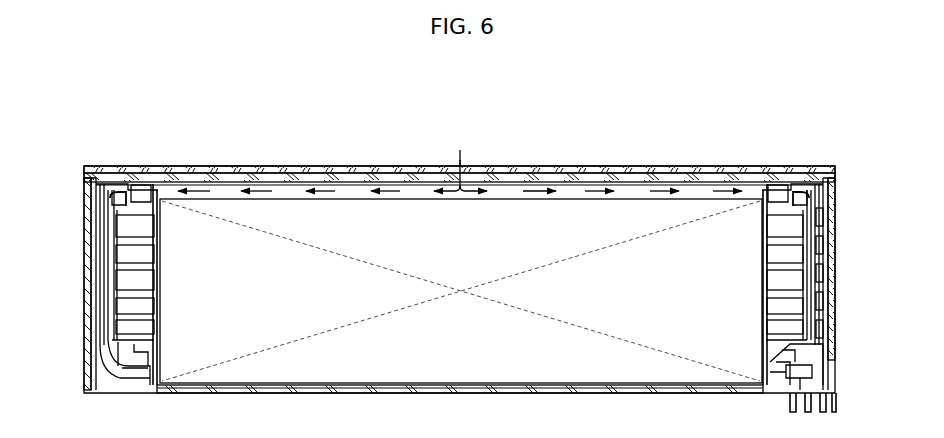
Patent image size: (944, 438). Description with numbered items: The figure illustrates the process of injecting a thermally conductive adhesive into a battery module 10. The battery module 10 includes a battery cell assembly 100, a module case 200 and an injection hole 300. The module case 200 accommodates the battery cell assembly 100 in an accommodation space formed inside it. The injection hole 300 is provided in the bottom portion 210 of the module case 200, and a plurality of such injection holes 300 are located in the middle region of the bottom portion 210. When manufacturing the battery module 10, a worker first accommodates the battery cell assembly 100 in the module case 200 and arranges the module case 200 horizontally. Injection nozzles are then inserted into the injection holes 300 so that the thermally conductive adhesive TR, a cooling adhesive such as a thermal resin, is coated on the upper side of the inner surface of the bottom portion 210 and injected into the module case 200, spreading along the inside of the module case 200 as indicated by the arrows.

The battery module 10 is at (270, 123).
The thermally conductive adhesive TR is at (460, 148).
The injection hole 300 is at (464, 185).
The bottom portion 210 is at (641, 166).
The battery cell assembly 100 is at (486, 383).
The module case 200 is at (592, 393).